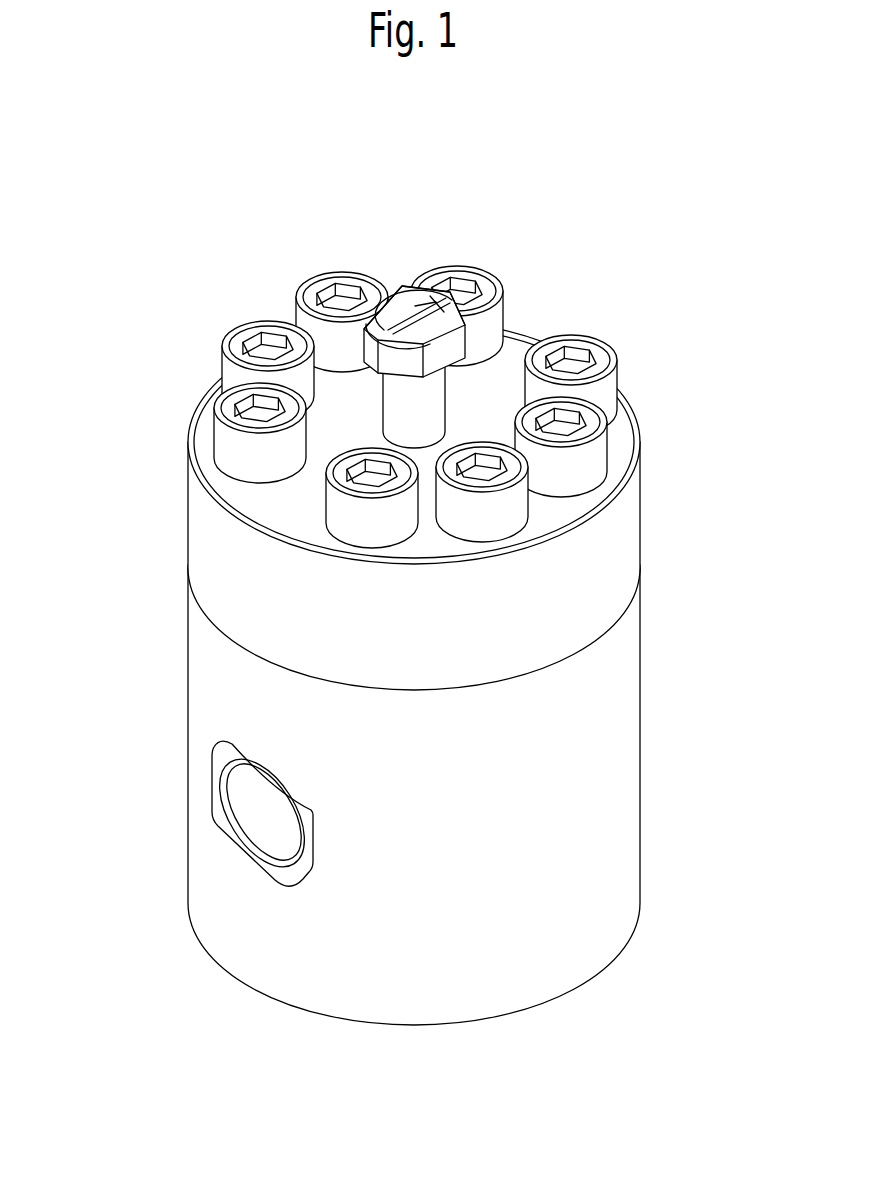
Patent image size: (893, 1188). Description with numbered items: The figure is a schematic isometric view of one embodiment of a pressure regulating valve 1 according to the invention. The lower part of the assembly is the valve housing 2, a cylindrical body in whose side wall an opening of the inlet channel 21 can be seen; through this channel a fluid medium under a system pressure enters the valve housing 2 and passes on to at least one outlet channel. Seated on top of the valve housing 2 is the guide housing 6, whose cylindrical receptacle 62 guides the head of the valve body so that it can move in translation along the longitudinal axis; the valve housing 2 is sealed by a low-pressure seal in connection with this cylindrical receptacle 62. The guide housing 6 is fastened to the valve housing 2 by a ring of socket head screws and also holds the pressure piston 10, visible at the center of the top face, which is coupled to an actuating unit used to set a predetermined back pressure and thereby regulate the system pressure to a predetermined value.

The pressure regulating valve 1 is at (400, 643).
The valve housing 2 is at (396, 795).
The guide housing 6 is at (667, 518).
The pressure piston 10 is at (413, 407).
The inlet channel 21 is at (248, 810).
The cylindrical receptacle 62 is at (602, 400).